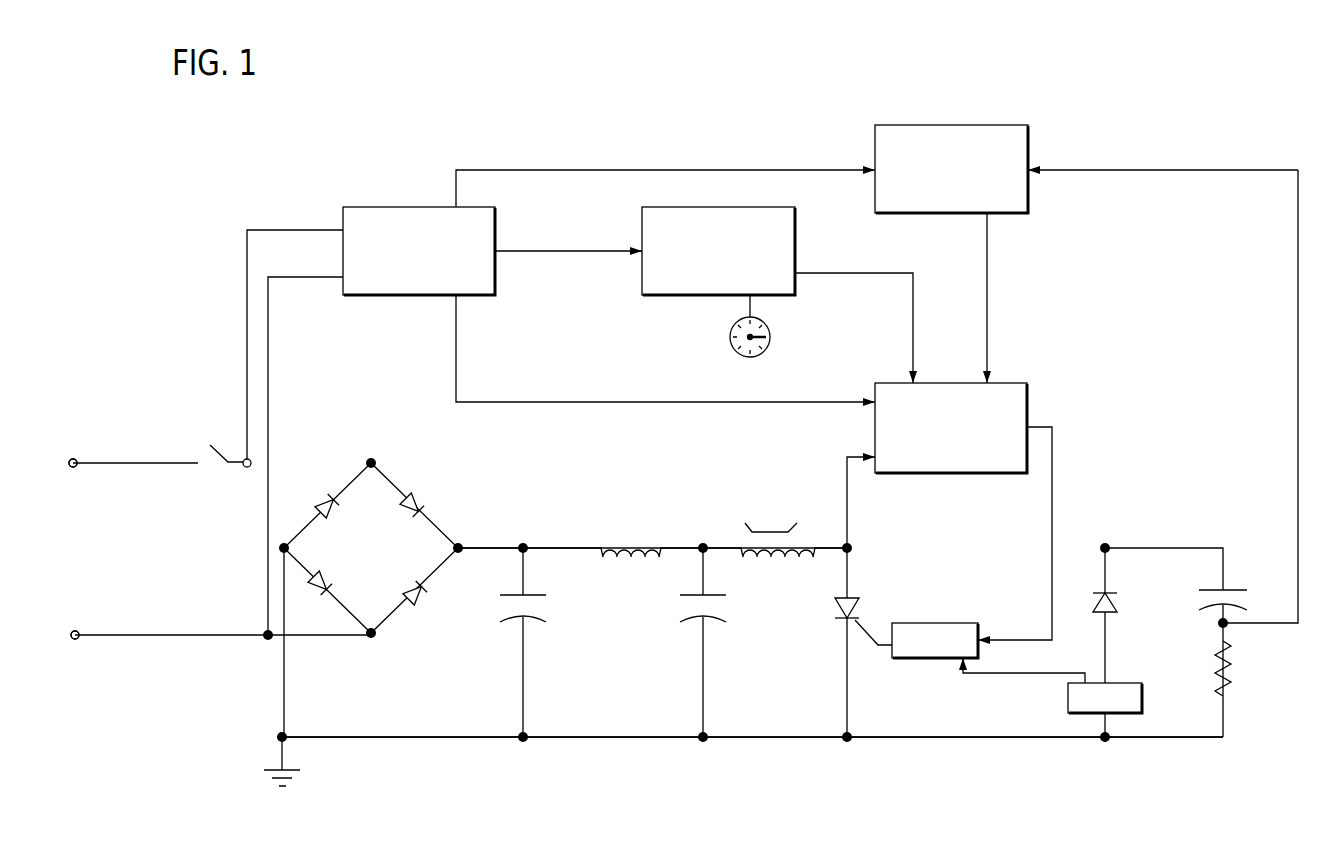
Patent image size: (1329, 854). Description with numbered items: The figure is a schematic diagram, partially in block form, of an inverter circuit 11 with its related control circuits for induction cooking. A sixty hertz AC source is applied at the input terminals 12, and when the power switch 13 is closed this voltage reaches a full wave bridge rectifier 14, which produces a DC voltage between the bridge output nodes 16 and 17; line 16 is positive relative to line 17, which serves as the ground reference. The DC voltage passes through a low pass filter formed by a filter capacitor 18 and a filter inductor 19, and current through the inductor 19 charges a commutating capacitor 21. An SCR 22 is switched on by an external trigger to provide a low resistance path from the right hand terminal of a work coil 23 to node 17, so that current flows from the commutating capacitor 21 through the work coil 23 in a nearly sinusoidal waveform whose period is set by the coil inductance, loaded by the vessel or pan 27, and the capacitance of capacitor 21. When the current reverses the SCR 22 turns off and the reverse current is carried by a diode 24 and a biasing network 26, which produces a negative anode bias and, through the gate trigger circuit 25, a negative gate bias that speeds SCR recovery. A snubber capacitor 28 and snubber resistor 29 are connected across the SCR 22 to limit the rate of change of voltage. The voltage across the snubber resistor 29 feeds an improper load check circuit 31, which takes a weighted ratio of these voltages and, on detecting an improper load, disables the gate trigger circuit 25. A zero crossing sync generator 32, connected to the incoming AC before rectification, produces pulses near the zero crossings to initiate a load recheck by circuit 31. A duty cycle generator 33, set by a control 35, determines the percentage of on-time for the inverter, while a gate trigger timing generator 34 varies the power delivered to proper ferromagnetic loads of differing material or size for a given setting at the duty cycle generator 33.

The inverter circuit 11 is at (500, 766).
The input terminals 12 is at (75, 457).
The power switch 13 is at (213, 468).
The full wave bridge rectifier 14 is at (388, 557).
The bridge output node (positive line) 16 is at (490, 546).
The bridge output node (ground reference line) 17 is at (401, 742).
The filter capacitor 18 is at (538, 593).
The filter inductor 19 is at (616, 546).
The commutating capacitor 21 is at (710, 592).
The SCR 22 is at (850, 598).
The work coil 23 is at (767, 563).
The diode 24 is at (1116, 603).
The gate trigger circuit 25 is at (925, 623).
The biasing network 26 is at (1068, 699).
The vessel (pan load) 27 is at (797, 523).
The snubber capacitor 28 is at (1232, 590).
The snubber resistor 29 is at (1235, 657).
The improper load check circuit 31 is at (1010, 213).
The zero crossing sync generator 32 is at (373, 295).
The duty cycle generator 33 is at (677, 295).
The gate trigger timing generator 34 is at (1027, 400).
The control 35 is at (769, 327).